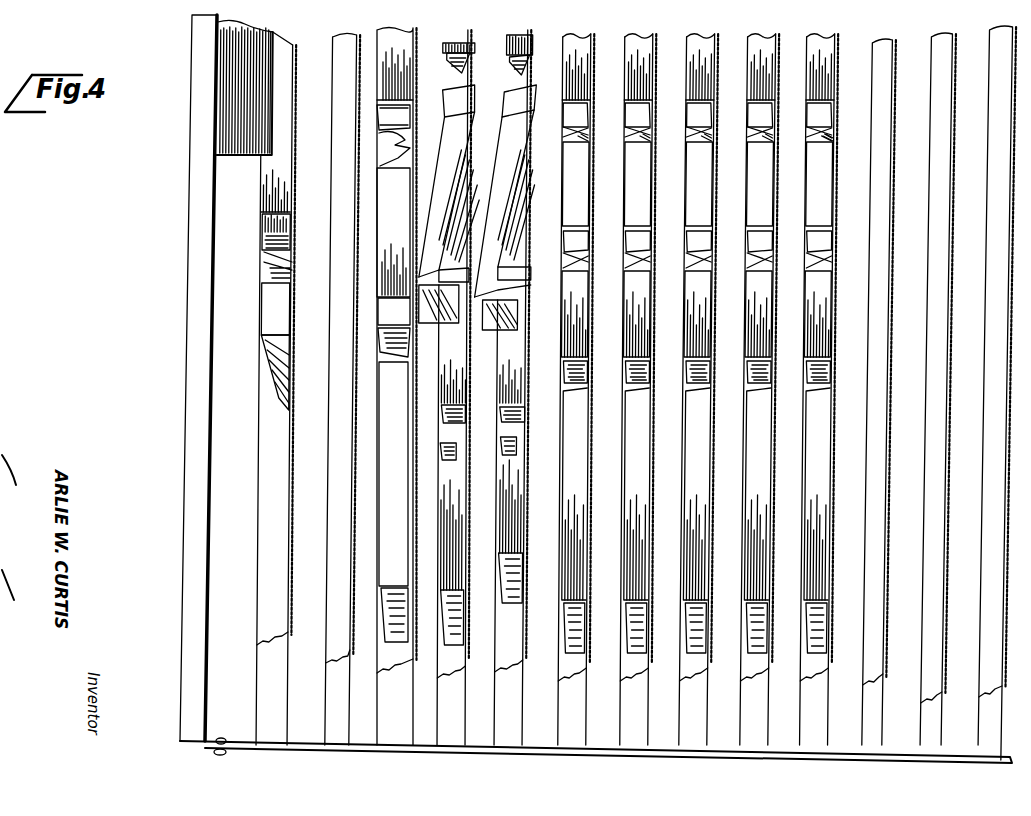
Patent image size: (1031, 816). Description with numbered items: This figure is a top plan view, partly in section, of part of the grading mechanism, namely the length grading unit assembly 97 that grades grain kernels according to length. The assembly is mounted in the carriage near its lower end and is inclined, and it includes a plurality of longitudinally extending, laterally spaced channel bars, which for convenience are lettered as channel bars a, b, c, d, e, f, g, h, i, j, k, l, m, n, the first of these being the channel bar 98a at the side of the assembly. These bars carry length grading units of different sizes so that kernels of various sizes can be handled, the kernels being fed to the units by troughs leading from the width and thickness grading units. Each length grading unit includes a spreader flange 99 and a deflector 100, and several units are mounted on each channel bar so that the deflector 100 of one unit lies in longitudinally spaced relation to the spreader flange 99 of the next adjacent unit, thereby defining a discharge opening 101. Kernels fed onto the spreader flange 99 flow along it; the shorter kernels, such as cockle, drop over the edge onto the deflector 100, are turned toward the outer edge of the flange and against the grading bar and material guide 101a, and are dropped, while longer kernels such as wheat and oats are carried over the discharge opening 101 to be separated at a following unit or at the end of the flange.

The length grading unit assembly 97 is at (190, 405).
The channel bar 98a is at (190, 500).
The spreader flange 99 is at (262, 190).
The deflector 100 is at (262, 246).
The discharge opening 101 is at (270, 254).
The grading bar and material guide 101a is at (441, 425).
The channel bar a is at (195, 377).
The channel bar b is at (268, 518).
The channel bar c is at (345, 535).
The channel bar d is at (402, 505).
The channel bar e is at (468, 512).
The channel bar f is at (528, 500).
The channel bar g is at (587, 468).
The channel bar h is at (650, 455).
The channel bar i is at (708, 455).
The channel bar j is at (772, 462).
The channel bar k is at (830, 460).
The channel bar l is at (890, 460).
The channel bar m is at (948, 455).
The channel bar n is at (1005, 450).